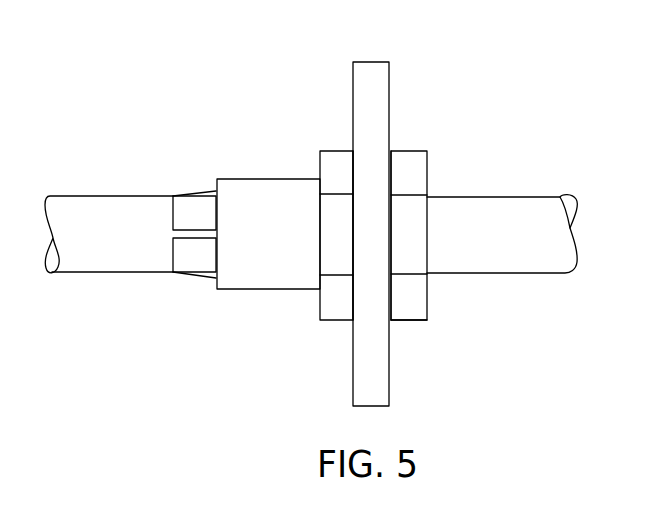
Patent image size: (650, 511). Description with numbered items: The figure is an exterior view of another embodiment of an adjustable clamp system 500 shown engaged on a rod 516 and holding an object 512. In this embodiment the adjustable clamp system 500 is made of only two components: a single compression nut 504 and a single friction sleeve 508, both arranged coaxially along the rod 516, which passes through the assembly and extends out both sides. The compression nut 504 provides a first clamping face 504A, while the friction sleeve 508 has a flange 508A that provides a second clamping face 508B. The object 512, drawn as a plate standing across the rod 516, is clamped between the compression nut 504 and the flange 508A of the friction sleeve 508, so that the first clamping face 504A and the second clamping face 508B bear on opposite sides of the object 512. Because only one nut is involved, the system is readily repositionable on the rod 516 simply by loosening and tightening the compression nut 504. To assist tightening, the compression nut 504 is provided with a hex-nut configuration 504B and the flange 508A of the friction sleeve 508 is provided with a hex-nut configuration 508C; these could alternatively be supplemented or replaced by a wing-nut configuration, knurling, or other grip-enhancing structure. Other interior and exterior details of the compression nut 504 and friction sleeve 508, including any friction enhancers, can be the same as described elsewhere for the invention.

The adjustable clamp system 500 is at (461, 44).
The compression nut 504 is at (267, 296).
The first clamping face 504A is at (353, 280).
The hex-nut configuration 504B is at (329, 144).
The friction sleeve 508 is at (190, 283).
The flange 508A is at (390, 160).
The second clamping face 508B is at (410, 297).
The hex-nut configuration 508C is at (408, 320).
The object 512 is at (372, 62).
The rod 516 is at (84, 196).